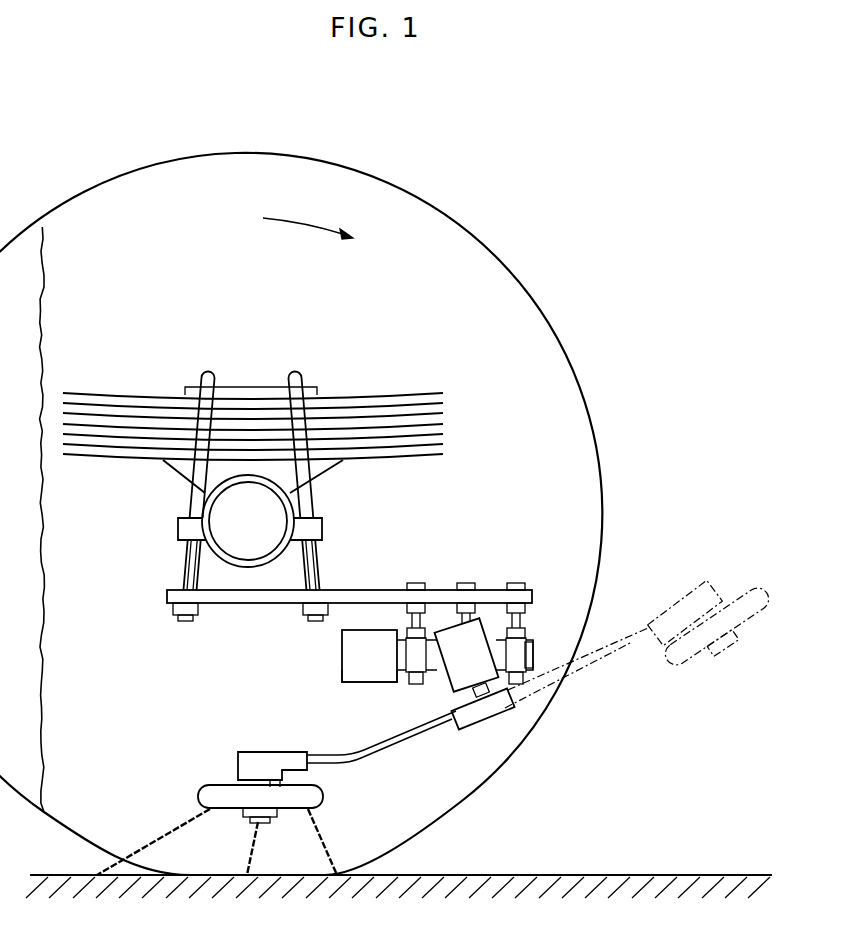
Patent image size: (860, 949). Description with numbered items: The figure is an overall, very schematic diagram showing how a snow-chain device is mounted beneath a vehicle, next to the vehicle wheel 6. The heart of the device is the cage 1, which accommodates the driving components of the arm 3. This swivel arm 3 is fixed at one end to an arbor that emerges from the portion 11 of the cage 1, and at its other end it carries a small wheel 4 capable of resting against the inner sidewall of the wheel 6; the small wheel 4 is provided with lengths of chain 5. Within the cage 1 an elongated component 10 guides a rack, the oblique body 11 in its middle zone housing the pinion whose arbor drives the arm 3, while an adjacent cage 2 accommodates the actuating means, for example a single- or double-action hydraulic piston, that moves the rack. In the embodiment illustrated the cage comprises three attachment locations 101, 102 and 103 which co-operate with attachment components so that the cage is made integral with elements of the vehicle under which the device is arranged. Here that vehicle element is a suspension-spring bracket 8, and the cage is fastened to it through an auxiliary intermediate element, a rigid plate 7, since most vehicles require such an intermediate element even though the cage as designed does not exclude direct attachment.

The cage 1 is at (543, 631).
The cage 2 is at (340, 658).
The arm 3 is at (410, 746).
The small wheel 4 is at (315, 797).
The lengths of chain 5 is at (323, 841).
The wheel 6 is at (547, 360).
The rigid plate 7 is at (375, 588).
The suspension-spring bracket 8 is at (180, 572).
The component 10 is at (489, 582).
The body 11 is at (440, 580).
The attachment location 101 is at (457, 667).
The attachment location 102 is at (358, 690).
The attachment location 103 is at (535, 663).